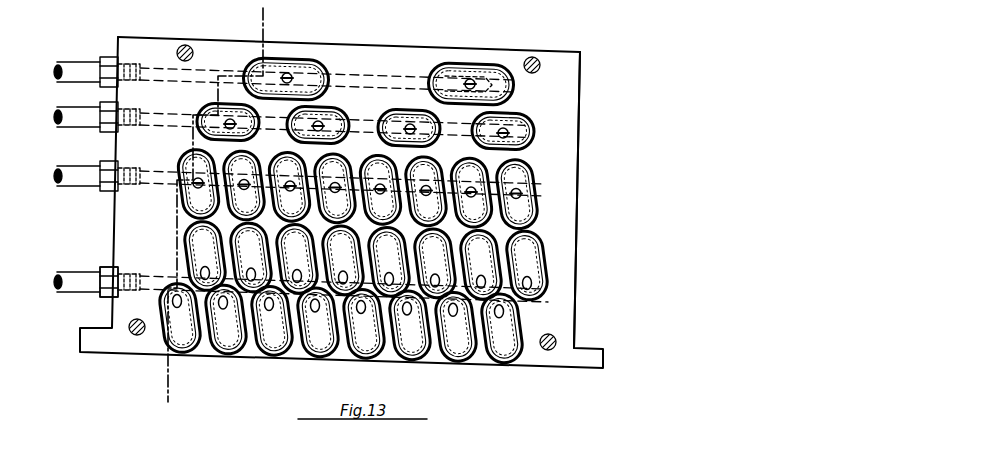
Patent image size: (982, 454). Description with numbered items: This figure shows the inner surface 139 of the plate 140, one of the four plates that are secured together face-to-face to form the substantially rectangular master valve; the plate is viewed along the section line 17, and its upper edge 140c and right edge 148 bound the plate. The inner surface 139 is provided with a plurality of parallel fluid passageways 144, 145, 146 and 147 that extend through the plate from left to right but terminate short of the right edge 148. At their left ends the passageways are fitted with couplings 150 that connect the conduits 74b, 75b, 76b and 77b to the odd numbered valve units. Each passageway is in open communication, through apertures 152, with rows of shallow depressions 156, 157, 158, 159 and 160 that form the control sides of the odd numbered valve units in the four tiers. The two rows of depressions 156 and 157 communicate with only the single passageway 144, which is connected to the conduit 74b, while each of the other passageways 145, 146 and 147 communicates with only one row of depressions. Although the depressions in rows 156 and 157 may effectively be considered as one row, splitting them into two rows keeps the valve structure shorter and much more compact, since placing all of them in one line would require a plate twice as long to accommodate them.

The plate 140 is at (591, 49).
The top edge of plate 140c is at (387, 44).
The right edge 148 is at (580, 73).
The inner surface 139 is at (423, 62).
The conduit 77b is at (72, 63).
The conduit 76b is at (62, 110).
The conduit 75b is at (67, 177).
The conduit 74b is at (67, 282).
The coupling 150 is at (97, 300).
The fluid passageway 147 is at (163, 64).
The fluid passageway 146 is at (150, 125).
The fluid passageway 145 is at (150, 187).
The fluid passageway 144 is at (147, 275).
The section line 17- 17 is at (252, 22).
The row of shallow depressions 160 is at (505, 88).
The row of shallow depressions 159 is at (522, 143).
The row of shallow depressions 158 is at (532, 210).
The row of shallow depressions 157 is at (532, 263).
The row of shallow depressions 156 is at (510, 340).
The aperture 152 is at (471, 80).